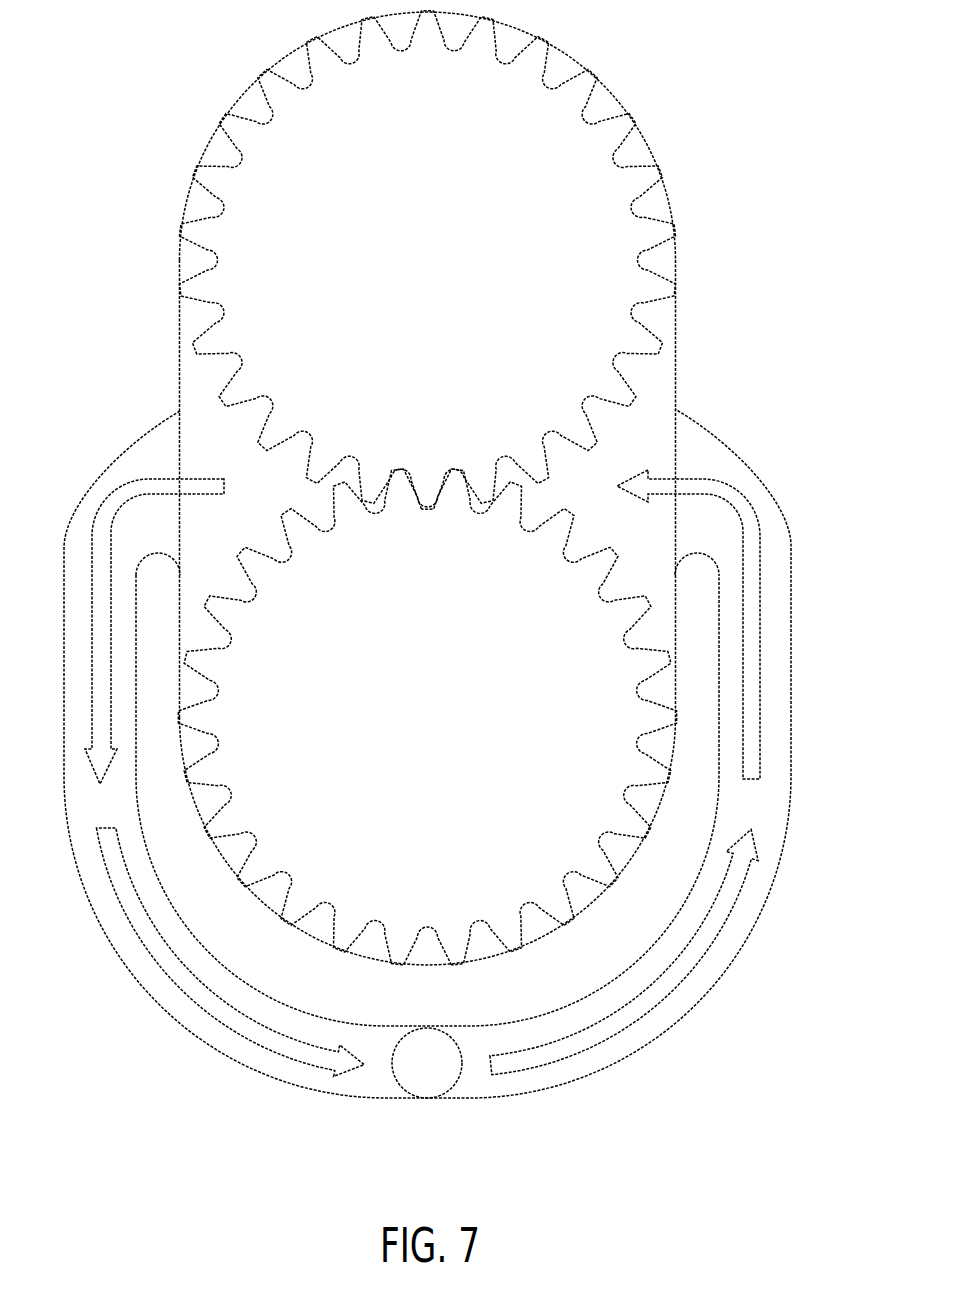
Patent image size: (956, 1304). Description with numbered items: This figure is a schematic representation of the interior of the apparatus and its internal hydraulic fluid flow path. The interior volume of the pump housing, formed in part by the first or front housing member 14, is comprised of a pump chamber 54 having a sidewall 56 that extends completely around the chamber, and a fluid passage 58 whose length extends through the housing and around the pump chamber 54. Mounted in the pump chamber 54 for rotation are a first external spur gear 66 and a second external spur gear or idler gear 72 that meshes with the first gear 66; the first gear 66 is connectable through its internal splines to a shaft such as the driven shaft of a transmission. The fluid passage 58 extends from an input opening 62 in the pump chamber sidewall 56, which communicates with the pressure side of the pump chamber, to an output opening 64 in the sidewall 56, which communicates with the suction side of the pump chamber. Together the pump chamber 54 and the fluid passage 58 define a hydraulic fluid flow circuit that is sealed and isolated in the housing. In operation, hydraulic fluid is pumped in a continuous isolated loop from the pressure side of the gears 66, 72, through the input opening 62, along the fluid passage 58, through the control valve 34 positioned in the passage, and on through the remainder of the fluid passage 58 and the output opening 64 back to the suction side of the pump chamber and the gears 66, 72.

The first or front housing member 14 is at (612, 93).
The second external spur gear or idler gear 72 is at (613, 202).
The sidewall 56 is at (675, 327).
The pump chamber 54 is at (640, 408).
The output opening 64 is at (664, 445).
The input opening 62 is at (200, 453).
The first external spur gear 66 is at (591, 772).
The fluid passage 58 is at (674, 1004).
The control valve 34 is at (428, 1088).